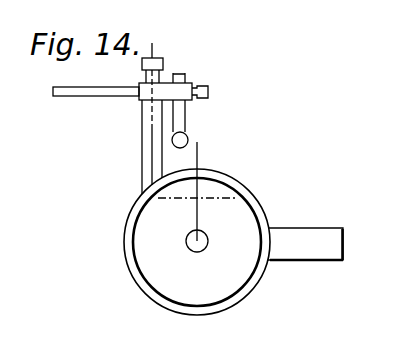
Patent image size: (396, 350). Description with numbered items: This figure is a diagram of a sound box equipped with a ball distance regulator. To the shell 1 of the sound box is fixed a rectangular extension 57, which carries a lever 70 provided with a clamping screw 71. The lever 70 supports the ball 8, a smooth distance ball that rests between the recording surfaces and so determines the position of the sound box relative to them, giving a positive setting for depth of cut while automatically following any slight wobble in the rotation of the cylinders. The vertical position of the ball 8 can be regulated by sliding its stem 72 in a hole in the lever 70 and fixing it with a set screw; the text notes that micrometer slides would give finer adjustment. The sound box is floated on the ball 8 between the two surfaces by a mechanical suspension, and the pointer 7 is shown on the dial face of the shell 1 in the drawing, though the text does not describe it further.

The shell 1 is at (254, 191).
The pointer 7 is at (198, 212).
The ball 8 is at (173, 152).
The rectangular extension 57 is at (143, 163).
The lever 70 is at (138, 98).
The clamping screw 71 is at (163, 63).
The stem 72 is at (188, 115).